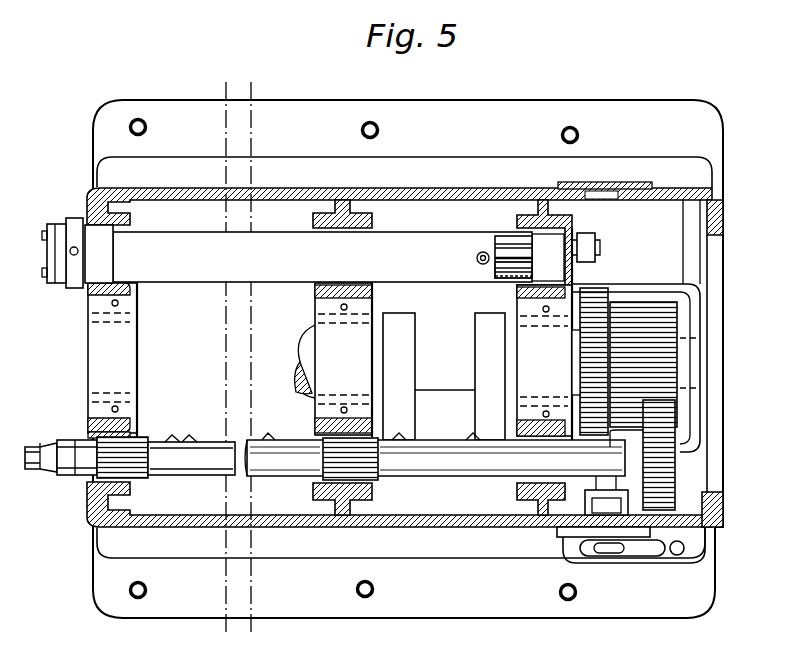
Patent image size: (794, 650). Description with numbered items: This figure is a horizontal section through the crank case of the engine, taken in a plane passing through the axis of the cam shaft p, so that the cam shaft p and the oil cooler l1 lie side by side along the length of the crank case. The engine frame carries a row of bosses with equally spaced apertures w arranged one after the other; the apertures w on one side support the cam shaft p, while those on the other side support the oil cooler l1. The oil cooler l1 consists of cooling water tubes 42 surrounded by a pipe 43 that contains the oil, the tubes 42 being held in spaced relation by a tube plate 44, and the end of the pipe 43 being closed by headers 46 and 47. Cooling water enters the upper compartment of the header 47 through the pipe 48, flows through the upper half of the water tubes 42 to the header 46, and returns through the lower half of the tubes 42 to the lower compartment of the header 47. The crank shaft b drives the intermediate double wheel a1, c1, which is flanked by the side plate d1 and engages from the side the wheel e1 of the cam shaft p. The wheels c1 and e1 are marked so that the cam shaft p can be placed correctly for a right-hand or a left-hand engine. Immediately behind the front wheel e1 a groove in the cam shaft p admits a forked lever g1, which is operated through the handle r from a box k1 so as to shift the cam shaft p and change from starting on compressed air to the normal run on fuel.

The pipe 48 is at (74, 247).
The header 47 is at (78, 283).
The oil cooler l1 is at (212, 262).
The apertures w is at (132, 426).
The engine crank shaft b is at (399, 366).
The cam shaft p is at (401, 454).
The cooling water tubes 42 is at (517, 244).
The pipe 43 is at (513, 255).
The tube plate 44 is at (528, 280).
The header 46 is at (578, 234).
The intermediate double wheel a1 is at (592, 292).
The intermediate double wheel c1 is at (648, 328).
The side plate d1 is at (688, 332).
The wheel of the cam shaft e1 is at (663, 445).
The forked lever g1 is at (610, 508).
The box k1 is at (598, 557).
The handle r is at (649, 549).